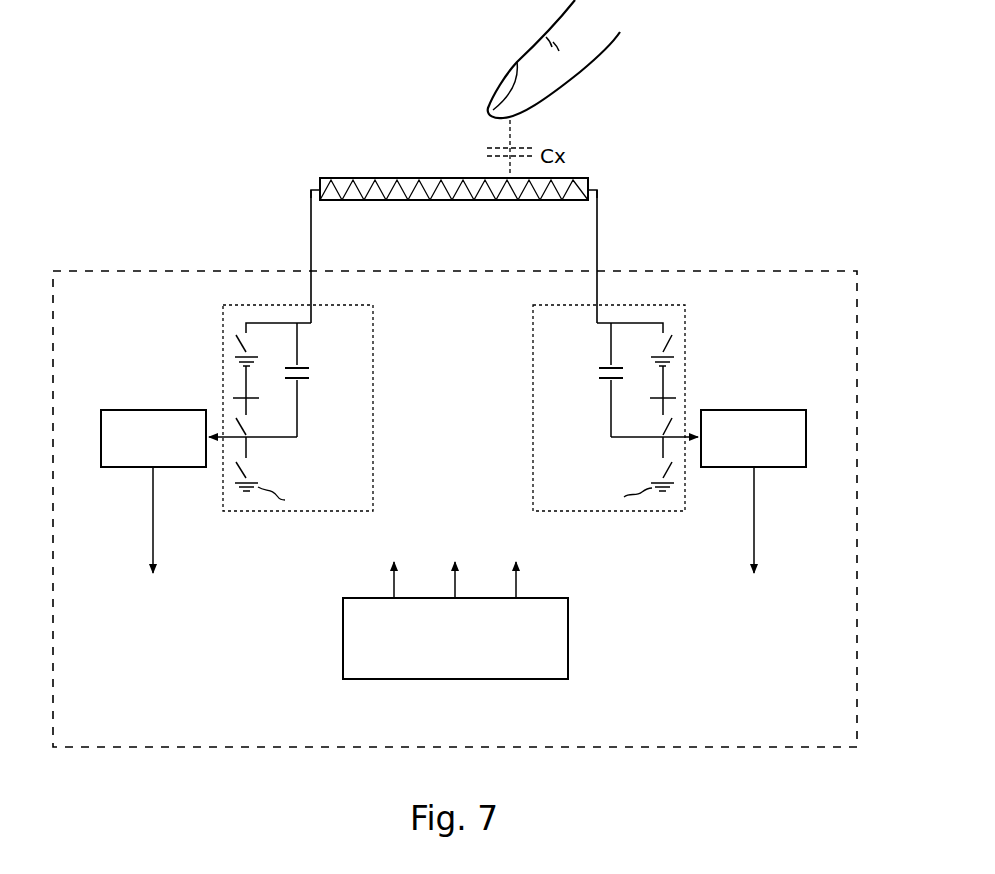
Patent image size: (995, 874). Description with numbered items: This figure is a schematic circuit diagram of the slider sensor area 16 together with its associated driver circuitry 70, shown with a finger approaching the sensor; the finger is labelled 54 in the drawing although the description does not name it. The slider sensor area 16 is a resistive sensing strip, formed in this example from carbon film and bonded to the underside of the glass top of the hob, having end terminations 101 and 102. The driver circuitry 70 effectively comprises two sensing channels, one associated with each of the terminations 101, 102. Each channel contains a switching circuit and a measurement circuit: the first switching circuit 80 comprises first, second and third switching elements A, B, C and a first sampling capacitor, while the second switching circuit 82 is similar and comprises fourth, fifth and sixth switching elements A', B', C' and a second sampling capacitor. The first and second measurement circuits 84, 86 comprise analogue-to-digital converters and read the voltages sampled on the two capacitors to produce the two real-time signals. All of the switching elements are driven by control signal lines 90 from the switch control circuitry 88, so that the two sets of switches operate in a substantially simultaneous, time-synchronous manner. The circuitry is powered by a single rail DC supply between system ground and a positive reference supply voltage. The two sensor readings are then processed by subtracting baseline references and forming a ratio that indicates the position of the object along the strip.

The finger 54 is at (580, 72).
The slider sensor area 16 is at (428, 178).
The end termination 101 is at (312, 186).
The end termination 102 is at (590, 185).
The driver circuitry 70 is at (670, 271).
The first switching circuit 80 is at (375, 305).
The second switching circuit 82 is at (533, 305).
The first measurement circuit 84 is at (125, 468).
The second measurement circuit 86 is at (781, 468).
The switch control circuitry 88 is at (568, 645).
The control signal lines 90 is at (532, 583).